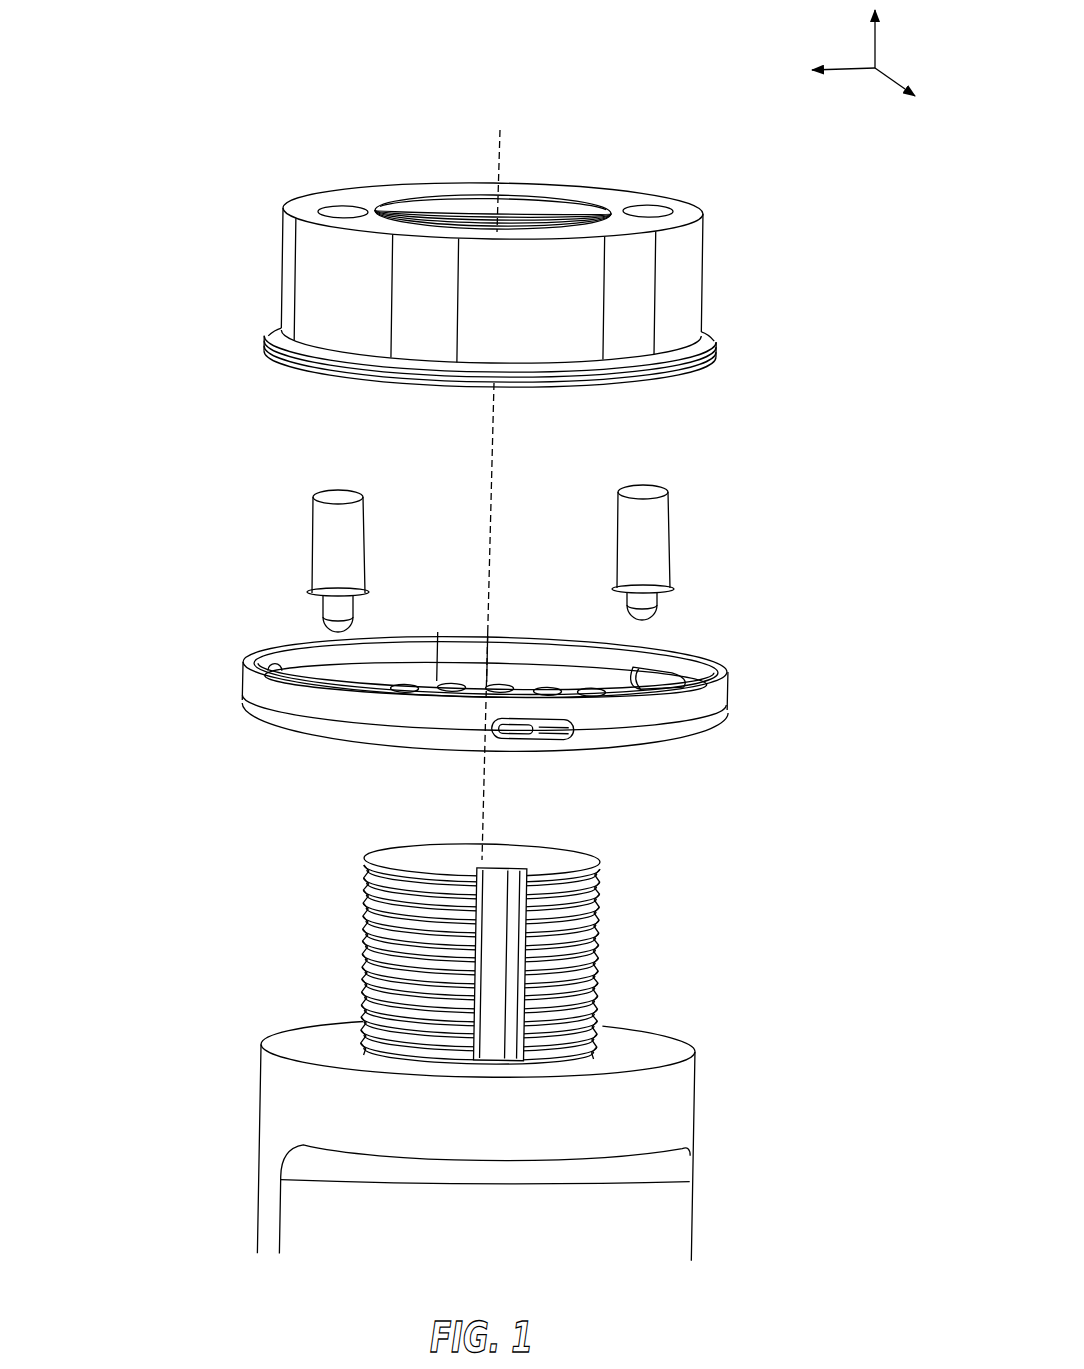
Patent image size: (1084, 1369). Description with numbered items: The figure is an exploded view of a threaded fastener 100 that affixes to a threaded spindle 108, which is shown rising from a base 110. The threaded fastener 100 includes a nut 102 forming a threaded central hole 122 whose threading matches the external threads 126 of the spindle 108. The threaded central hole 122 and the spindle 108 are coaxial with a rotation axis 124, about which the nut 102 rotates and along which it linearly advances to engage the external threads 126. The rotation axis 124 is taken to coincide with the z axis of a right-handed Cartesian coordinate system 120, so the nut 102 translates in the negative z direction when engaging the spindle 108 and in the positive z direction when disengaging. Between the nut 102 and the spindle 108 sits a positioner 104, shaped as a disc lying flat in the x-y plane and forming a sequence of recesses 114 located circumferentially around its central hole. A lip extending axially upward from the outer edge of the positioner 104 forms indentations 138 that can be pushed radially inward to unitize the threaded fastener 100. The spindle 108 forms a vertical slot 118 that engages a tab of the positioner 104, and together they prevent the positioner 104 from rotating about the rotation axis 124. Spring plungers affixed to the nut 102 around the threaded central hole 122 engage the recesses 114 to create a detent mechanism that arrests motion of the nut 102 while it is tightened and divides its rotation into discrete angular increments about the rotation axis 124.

The threaded fastener 100 is at (140, 70).
The nut 102 is at (790, 190).
The positioner 104 is at (788, 638).
The threaded spindle 108 is at (788, 855).
The container body 110 is at (321, 1046).
The recesses 114 is at (546, 683).
The vertical slot 118 is at (504, 880).
The right-handed Cartesian coordinate system 120 is at (828, 38).
The threaded central hole 122 is at (465, 207).
The rotation axis 124 is at (493, 429).
The external threads 126 is at (600, 967).
The indentations 138 is at (680, 651).